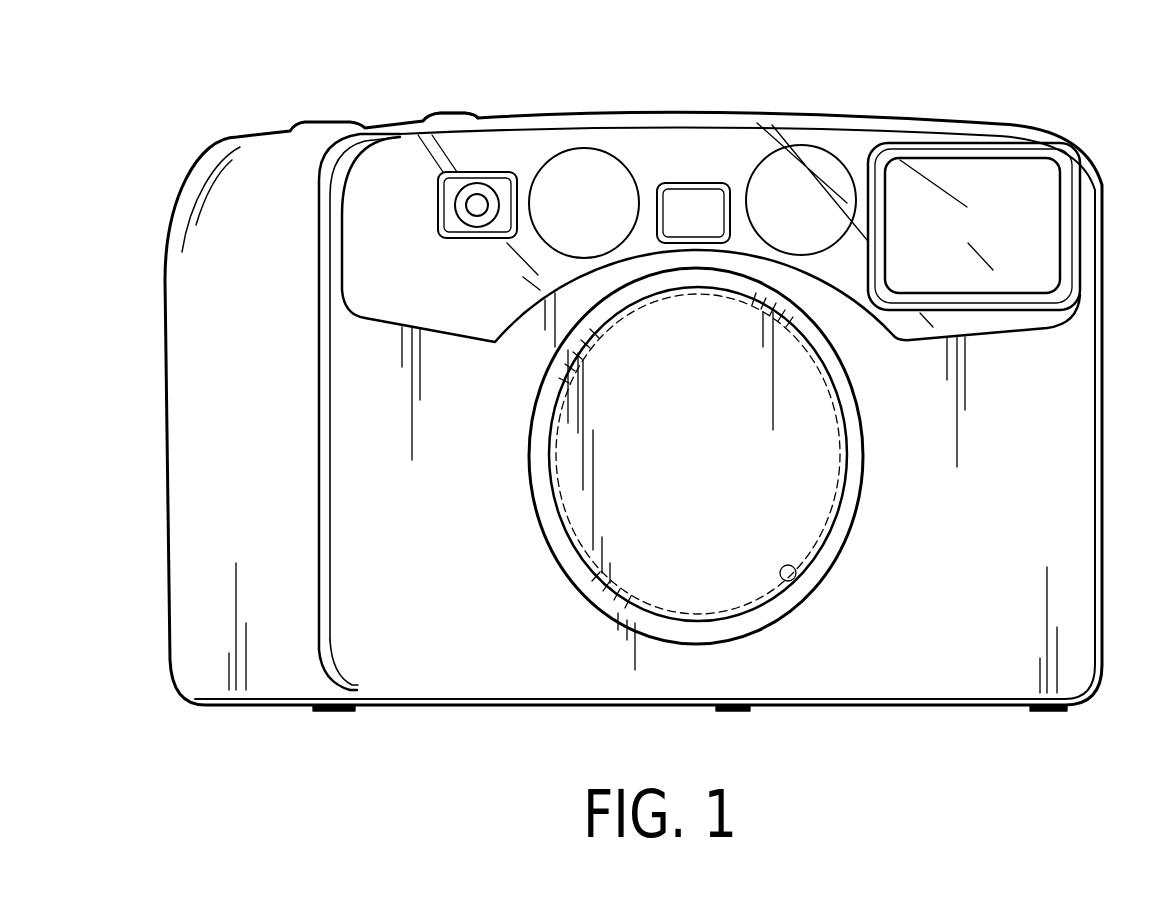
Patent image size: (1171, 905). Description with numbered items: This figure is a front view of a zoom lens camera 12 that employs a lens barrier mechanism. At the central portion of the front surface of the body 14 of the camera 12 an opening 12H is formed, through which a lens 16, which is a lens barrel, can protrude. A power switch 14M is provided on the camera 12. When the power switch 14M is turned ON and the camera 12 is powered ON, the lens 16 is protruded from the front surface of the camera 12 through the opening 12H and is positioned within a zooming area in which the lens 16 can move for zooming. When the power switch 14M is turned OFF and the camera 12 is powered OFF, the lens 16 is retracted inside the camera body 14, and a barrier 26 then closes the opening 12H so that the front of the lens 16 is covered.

The zoom lens camera 12 is at (725, 100).
The opening 12H is at (797, 571).
The body 14 is at (1073, 480).
The power switch 14M is at (462, 114).
The lens 16 is at (843, 462).
The barrier 26 is at (621, 467).